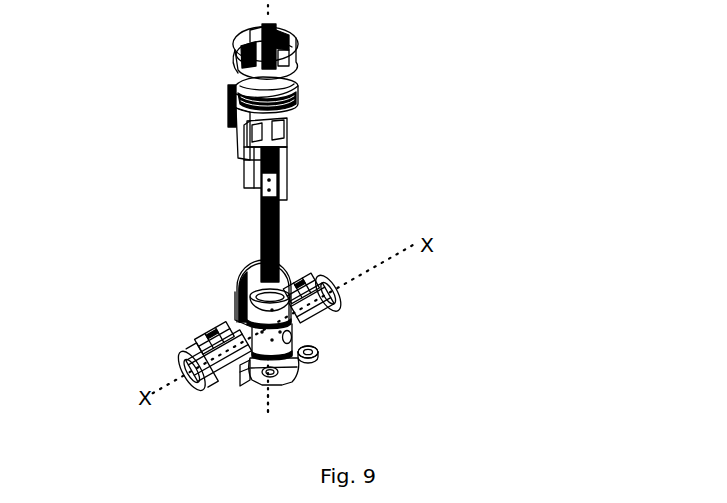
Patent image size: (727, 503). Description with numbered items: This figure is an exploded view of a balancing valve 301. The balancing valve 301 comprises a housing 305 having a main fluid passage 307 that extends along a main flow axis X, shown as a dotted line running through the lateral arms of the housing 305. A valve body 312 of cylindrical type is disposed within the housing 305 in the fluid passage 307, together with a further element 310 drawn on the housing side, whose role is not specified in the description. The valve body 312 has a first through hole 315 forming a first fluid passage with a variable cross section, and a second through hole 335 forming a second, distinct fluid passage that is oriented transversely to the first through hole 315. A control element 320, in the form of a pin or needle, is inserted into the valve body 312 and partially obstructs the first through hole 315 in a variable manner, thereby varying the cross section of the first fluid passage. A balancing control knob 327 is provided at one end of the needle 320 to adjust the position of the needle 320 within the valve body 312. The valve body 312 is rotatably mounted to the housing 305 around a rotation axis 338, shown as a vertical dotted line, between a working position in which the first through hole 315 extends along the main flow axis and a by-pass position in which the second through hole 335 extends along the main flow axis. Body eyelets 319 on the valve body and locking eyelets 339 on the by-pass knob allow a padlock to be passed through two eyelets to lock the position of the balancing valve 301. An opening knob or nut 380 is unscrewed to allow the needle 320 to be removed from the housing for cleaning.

The balancing valve 301 is at (118, 156).
The balancing control knob 327 is at (292, 58).
The opening knob or nut 380 is at (300, 95).
The control element 320 is at (281, 232).
The housing 310 is at (292, 278).
The housing 305 is at (234, 318).
The main fluid passage 307 is at (345, 298).
The first through hole 315 is at (293, 333).
The body eyelets 319 is at (312, 355).
The locking eyelets 339 is at (308, 352).
The valve body 312 is at (258, 379).
The second through hole 335 is at (247, 374).
The rotation axis 338 is at (271, 406).